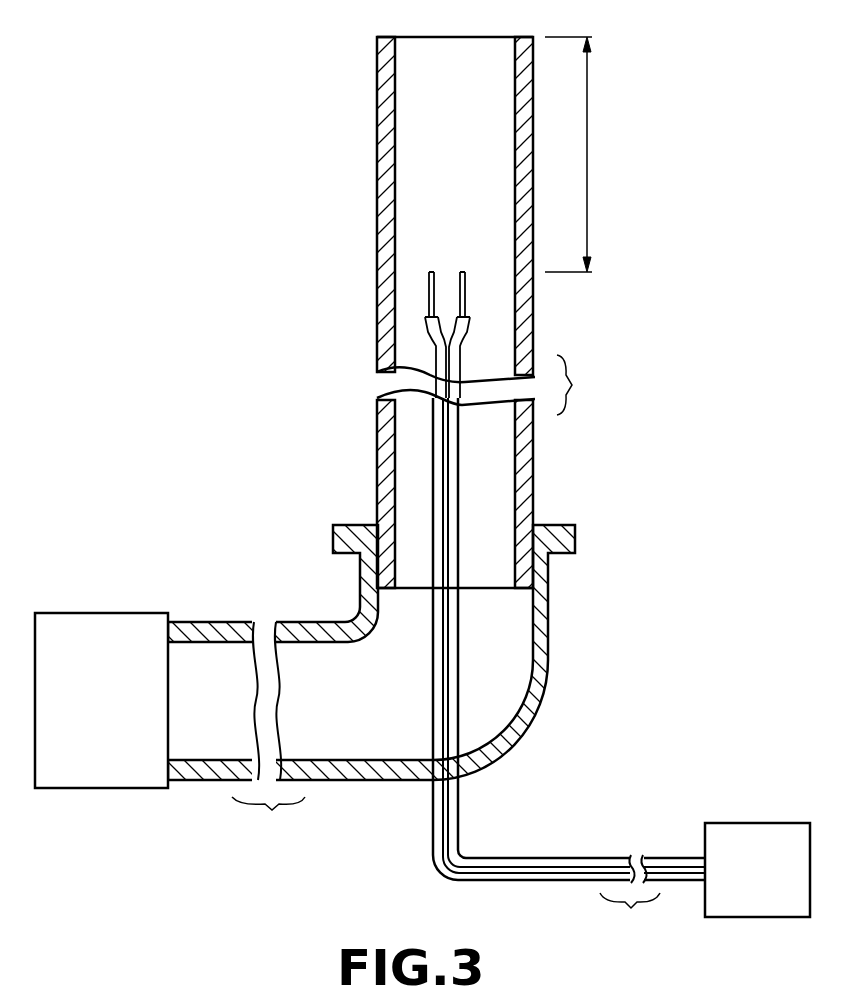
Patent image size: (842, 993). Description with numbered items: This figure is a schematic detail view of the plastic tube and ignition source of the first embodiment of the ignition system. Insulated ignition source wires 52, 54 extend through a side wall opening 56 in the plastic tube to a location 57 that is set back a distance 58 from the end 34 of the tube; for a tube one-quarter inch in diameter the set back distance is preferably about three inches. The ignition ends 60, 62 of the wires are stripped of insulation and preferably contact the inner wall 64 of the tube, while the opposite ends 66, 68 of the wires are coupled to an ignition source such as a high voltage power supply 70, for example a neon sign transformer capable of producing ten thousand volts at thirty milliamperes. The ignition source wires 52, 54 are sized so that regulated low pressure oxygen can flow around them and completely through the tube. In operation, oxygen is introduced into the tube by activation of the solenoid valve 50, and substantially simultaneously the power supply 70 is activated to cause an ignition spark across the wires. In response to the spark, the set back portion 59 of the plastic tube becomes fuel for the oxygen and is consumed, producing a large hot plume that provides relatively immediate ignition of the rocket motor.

The end of the tube 34 is at (423, 298).
The set back portion 59 is at (385, 152).
The location 57 is at (425, 187).
The set back distance 58 is at (587, 140).
The ignition end 60 is at (466, 292).
The ignition end 62 is at (430, 297).
The inner wall 64 is at (545, 318).
The ignition source wire 52 is at (437, 423).
The ignition source wire 54 is at (450, 443).
The solenoid valve 50 is at (93, 630).
The side wall opening 56 is at (432, 782).
The opposite end of the wire 66 is at (688, 880).
The opposite end of the wire 68 is at (690, 860).
The high voltage power supply 70 is at (740, 825).